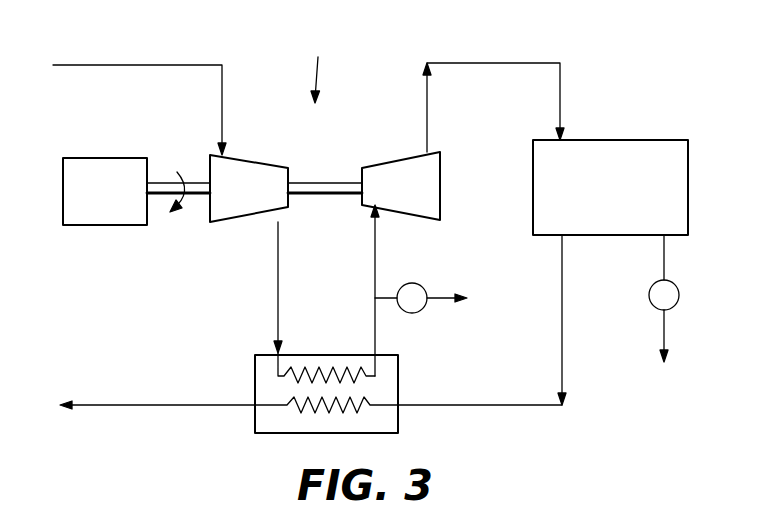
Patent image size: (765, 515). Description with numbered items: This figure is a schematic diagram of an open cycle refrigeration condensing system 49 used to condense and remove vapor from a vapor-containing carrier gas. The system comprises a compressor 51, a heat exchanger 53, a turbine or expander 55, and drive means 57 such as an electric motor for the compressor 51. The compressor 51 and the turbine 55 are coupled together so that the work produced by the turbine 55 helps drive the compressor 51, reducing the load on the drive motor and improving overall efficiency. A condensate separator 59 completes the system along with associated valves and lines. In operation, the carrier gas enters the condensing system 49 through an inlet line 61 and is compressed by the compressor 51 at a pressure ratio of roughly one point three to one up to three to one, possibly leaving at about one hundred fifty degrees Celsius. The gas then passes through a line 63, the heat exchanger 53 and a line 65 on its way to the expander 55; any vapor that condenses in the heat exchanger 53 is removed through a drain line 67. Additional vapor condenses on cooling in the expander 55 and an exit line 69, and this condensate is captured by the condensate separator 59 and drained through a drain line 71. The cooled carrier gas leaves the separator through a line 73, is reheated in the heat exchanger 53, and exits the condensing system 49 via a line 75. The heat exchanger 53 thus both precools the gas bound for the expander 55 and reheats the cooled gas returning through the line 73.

The open cycle refrigeration condensing system 49 is at (318, 62).
The compressor 51 is at (262, 163).
The heat exchanger 53 is at (268, 437).
The turbine or expander 55 is at (385, 166).
The drive means 57 is at (97, 227).
The condensate separator 59 is at (653, 141).
The inlet line 61 is at (121, 65).
The line 63 is at (280, 302).
The line 65 is at (373, 258).
The drain line 67 is at (440, 303).
The exit line 69 is at (495, 63).
The drain line 71 is at (667, 262).
The line 73 is at (562, 313).
The line 75 is at (142, 403).